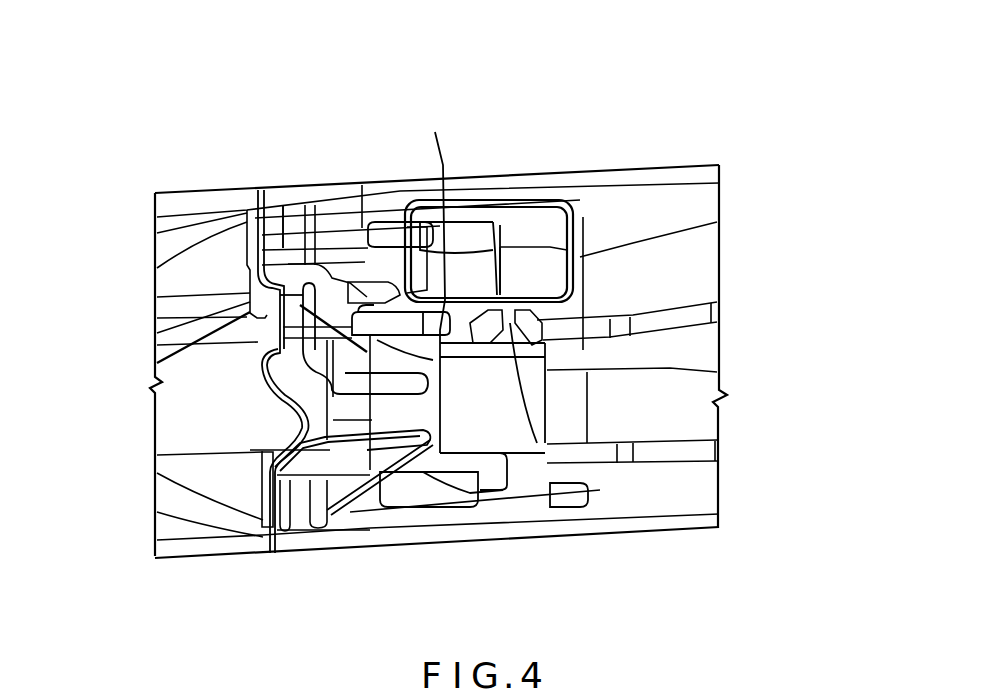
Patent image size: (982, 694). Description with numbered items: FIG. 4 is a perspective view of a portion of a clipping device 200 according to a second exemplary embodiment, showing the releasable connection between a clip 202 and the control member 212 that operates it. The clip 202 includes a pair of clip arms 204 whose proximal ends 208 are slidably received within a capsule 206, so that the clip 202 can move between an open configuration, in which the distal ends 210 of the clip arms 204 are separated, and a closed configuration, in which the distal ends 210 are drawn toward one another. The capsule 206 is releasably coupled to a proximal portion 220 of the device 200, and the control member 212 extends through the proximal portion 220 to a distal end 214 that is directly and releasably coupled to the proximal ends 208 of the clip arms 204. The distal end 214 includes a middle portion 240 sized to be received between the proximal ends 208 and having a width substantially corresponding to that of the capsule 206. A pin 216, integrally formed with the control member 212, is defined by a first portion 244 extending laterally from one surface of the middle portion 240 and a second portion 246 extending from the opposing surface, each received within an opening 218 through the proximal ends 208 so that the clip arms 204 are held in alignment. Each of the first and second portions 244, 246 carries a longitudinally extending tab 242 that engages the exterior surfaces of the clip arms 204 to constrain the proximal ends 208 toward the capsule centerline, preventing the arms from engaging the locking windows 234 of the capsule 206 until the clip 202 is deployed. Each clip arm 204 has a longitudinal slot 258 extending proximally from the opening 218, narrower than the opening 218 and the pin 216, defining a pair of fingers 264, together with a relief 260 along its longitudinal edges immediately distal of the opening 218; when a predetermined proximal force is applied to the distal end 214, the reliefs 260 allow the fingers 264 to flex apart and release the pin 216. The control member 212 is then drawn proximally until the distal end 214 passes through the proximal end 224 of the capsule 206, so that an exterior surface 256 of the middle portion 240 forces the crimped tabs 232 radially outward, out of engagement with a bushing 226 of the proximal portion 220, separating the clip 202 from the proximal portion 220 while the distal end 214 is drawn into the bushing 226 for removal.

The clipping device 200 is at (346, 105).
The clip 202 is at (577, 128).
The clip arms 204 is at (683, 403).
The capsule 206 is at (645, 197).
The proximal ends 208 is at (552, 310).
The distal ends 210 is at (668, 693).
The control member 212 is at (173, 423).
The distal end 214 is at (473, 277).
The pin 216 is at (533, 245).
The openings 218 is at (520, 215).
The proximal portion 220 is at (166, 148).
The proximal end 224 is at (283, 197).
The bushing 226 is at (177, 245).
The crimped tabs 232 is at (310, 397).
The locking windows 234 is at (583, 220).
The middle portion 240 is at (437, 440).
The tab 242 is at (415, 210).
The first portion 244 is at (483, 262).
The second portion 246 is at (483, 483).
The exterior surface 256 is at (497, 413).
The longitudinal slot 258 is at (328, 305).
The relief 260 is at (543, 440).
The fingers 264 is at (355, 280).